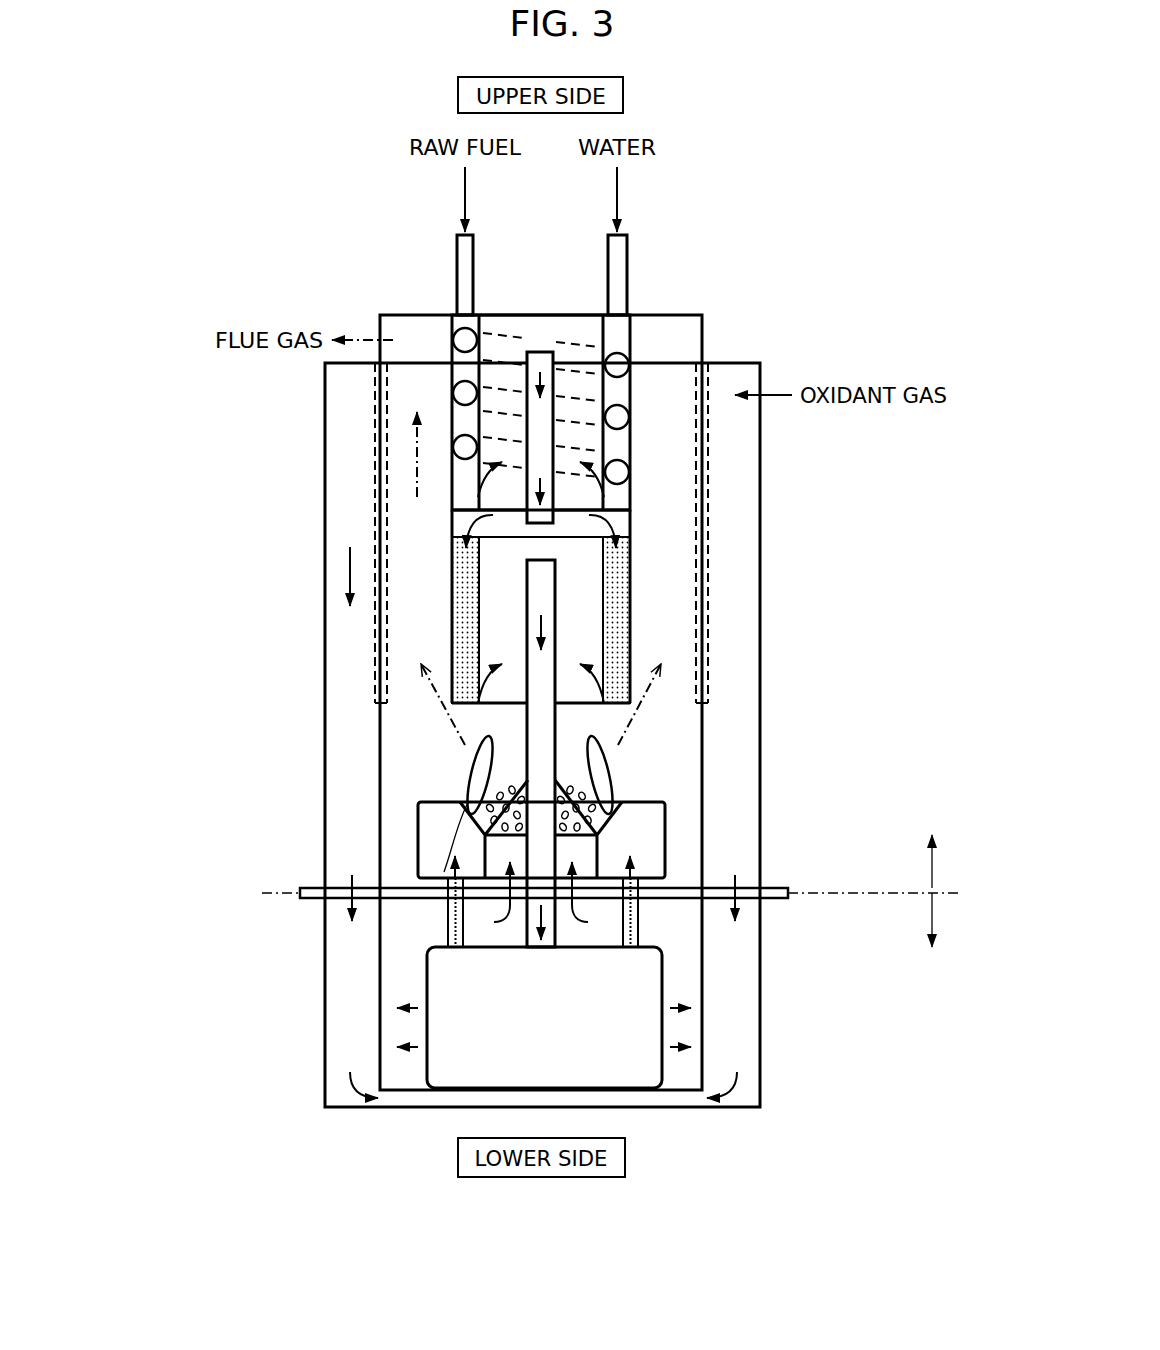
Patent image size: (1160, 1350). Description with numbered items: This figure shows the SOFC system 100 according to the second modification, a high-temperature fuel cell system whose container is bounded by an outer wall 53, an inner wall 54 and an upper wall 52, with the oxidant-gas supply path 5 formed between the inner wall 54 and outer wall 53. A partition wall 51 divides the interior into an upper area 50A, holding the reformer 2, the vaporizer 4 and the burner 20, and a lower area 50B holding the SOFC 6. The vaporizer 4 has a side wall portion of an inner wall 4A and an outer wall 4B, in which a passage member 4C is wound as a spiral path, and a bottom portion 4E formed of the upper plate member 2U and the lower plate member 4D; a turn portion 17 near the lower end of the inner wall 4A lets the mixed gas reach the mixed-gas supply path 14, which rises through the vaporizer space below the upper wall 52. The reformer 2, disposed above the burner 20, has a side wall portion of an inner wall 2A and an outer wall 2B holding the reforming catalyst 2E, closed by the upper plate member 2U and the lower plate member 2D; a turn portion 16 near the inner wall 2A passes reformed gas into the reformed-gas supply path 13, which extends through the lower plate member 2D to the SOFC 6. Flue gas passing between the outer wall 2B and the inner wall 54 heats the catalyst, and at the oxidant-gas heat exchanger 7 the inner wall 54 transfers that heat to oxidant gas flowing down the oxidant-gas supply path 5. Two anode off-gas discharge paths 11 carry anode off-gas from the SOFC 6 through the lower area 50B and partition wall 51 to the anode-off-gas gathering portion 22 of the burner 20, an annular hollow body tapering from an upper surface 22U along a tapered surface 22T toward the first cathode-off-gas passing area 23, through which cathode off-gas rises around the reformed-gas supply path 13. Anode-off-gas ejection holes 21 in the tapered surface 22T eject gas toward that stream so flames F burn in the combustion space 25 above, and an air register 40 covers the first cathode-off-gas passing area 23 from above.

The SOFC system 100 is at (818, 188).
The upper wall 52 is at (406, 316).
The oxidant-gas supply path 5 is at (341, 649).
The oxidant-gas heat exchanger 7 is at (375, 480).
The vaporizer 4 is at (638, 388).
The inner wall 4A is at (627, 320).
The outer wall 4B is at (634, 344).
The passage member 4C is at (484, 334).
The mixed-gas supply path 14 is at (557, 352).
The turn portion 17 is at (624, 487).
The lower plate member 4D is at (625, 528).
The bottom portion 4E is at (518, 534).
The reformer 2 is at (636, 620).
The inner wall 2A is at (632, 573).
The outer wall 2B is at (636, 602).
The reforming catalyst 2E is at (477, 616).
The upper plate member 2U is at (452, 518).
The lower plate member 2D is at (519, 700).
The turn portion 16 is at (614, 656).
The reformed-gas supply path 13 is at (556, 730).
The combustion space 25 is at (520, 739).
The flames F is at (612, 790).
The burner 20 is at (416, 822).
The anode-off-gas gathering portion 22 is at (447, 835).
The tapered surface 22T is at (463, 786).
The upper surface 22U is at (445, 800).
The anode-off-gas ejection holes 21 is at (468, 803).
The first cathode-off-gas passing area 23 is at (521, 862).
The air register 40 is at (625, 801).
The outer wall 53 is at (762, 770).
The inner wall 54 is at (690, 770).
The partition wall 51 is at (782, 898).
The upper area 50A is at (929, 844).
The lower area 50B is at (928, 939).
The anode off-gas discharge paths 11 is at (448, 915).
The SOFC 6 is at (532, 1029).